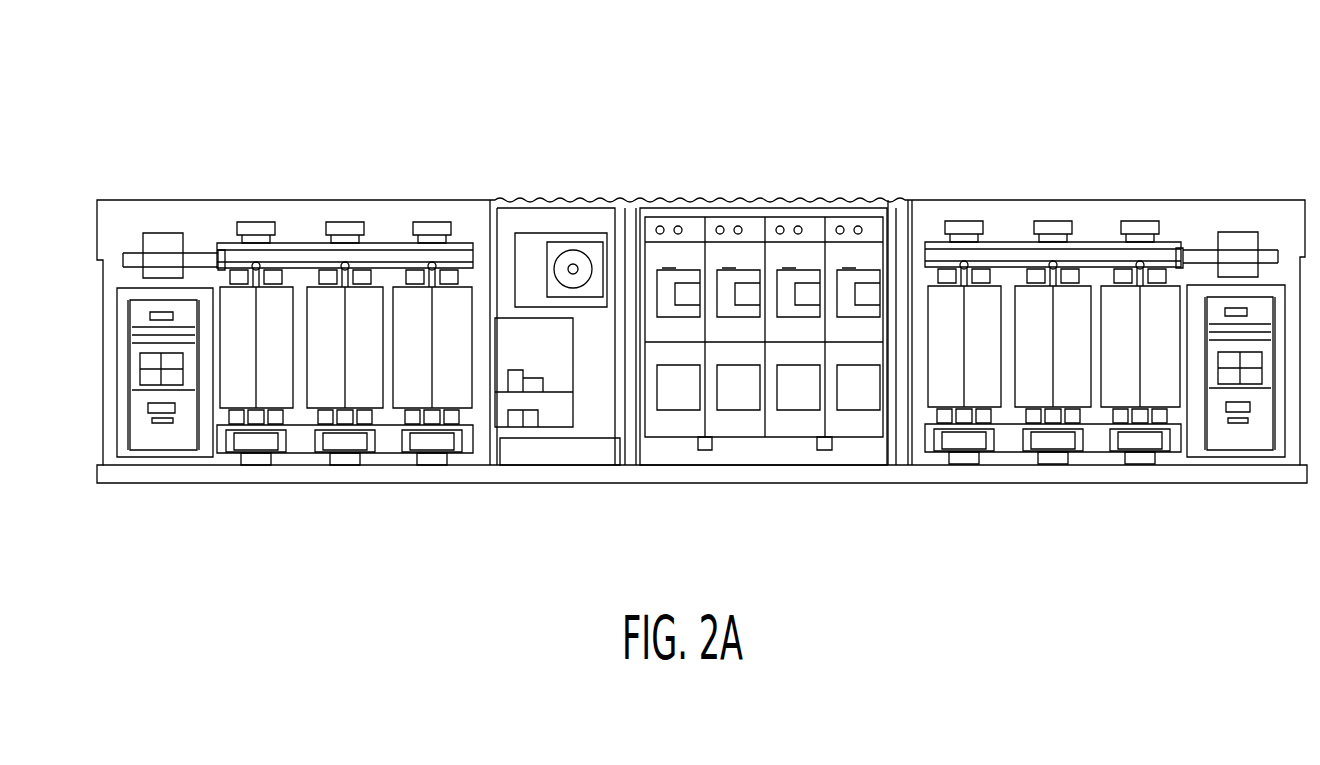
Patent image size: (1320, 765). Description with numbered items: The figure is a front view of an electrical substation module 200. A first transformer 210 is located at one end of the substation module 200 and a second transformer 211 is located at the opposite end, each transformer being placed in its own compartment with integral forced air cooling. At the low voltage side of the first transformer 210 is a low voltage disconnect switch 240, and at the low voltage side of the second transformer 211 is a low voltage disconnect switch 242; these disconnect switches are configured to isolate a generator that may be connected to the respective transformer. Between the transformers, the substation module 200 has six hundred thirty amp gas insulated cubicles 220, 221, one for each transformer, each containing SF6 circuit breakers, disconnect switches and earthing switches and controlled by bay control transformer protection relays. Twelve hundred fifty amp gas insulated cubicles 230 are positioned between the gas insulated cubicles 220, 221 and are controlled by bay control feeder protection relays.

The electrical substation module 200 is at (1082, 137).
The first transformer 210 is at (327, 382).
The second transformer 211 is at (1077, 376).
The 630 amp gas insulated cubicle 220 is at (674, 422).
The 630 amp gas insulated cubicle 221 is at (857, 422).
The 1250 amp gas insulated cubicle 230 is at (798, 422).
The low voltage disconnect switch 240 is at (165, 433).
The low voltage disconnect switch 242 is at (1245, 436).